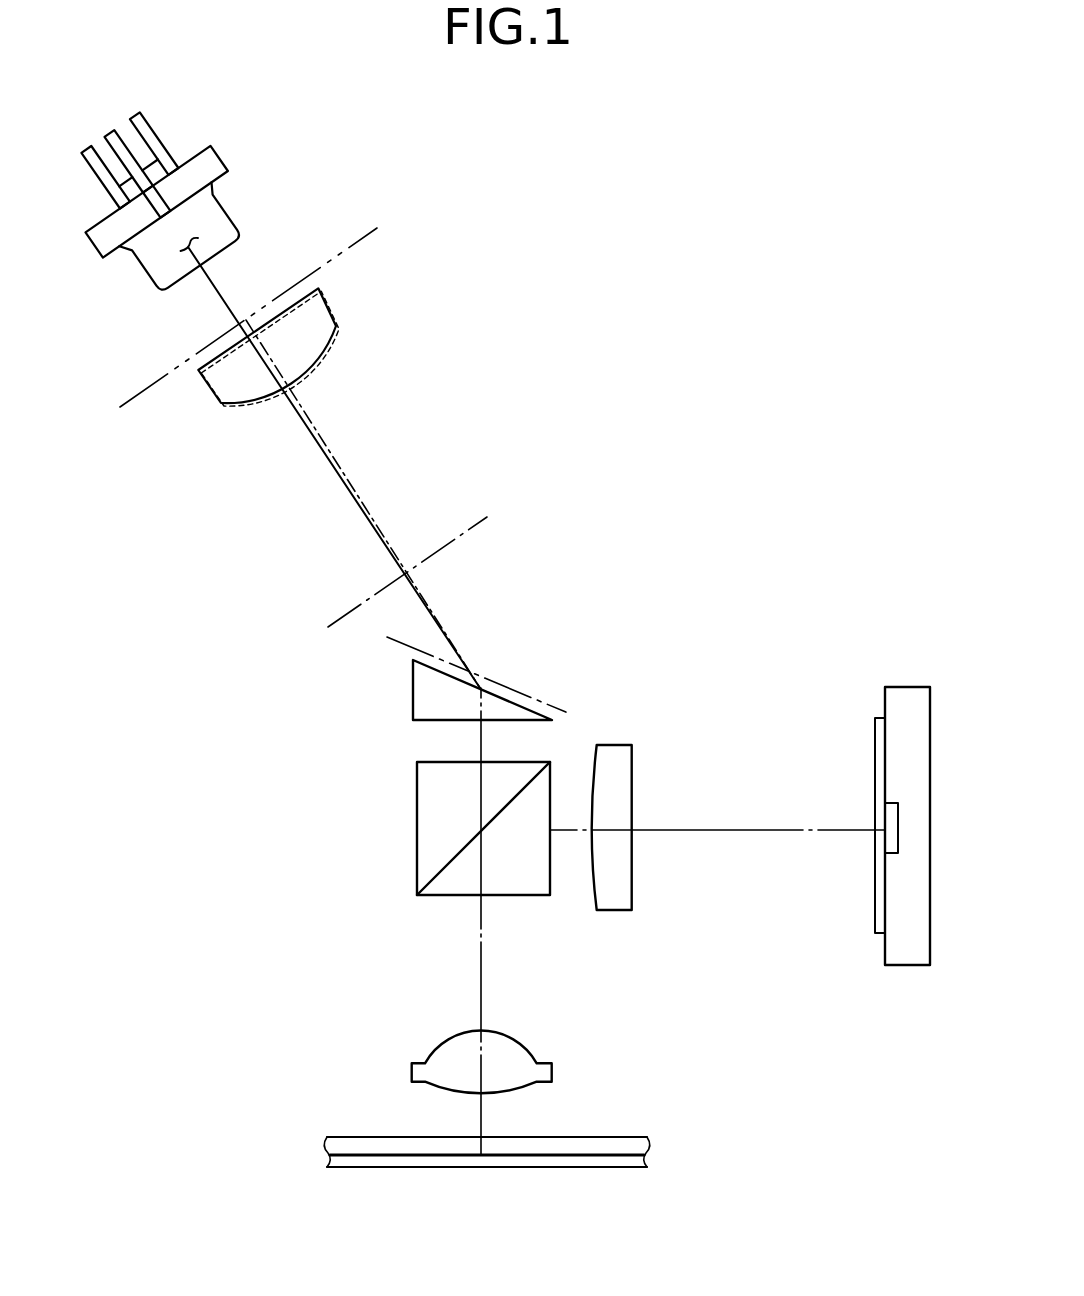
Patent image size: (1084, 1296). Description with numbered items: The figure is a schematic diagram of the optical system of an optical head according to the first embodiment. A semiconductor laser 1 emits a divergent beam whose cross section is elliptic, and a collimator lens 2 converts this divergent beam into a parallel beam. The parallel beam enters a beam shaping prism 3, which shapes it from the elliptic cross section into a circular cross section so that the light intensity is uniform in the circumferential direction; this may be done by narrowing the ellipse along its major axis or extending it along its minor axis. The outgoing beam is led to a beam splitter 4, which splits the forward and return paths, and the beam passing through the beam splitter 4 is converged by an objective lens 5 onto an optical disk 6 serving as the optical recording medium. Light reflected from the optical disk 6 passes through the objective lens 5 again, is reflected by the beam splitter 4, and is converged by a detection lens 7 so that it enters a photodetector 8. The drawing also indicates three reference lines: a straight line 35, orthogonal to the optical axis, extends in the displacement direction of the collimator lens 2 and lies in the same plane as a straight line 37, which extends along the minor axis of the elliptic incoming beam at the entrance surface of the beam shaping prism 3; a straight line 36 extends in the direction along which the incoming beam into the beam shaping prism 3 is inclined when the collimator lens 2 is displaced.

The semiconductor laser 1 is at (220, 158).
The collimator lens 2 is at (327, 317).
The beam shaping prism 3 is at (411, 688).
The beam splitter 4 is at (416, 833).
The objective lens 5 is at (411, 1068).
The optical disk 6 is at (620, 1137).
The detection lens 7 is at (622, 910).
The photodetector 8 is at (905, 953).
The straight line 35 is at (348, 250).
The straight line 36 is at (440, 548).
The straight line 37 is at (508, 687).